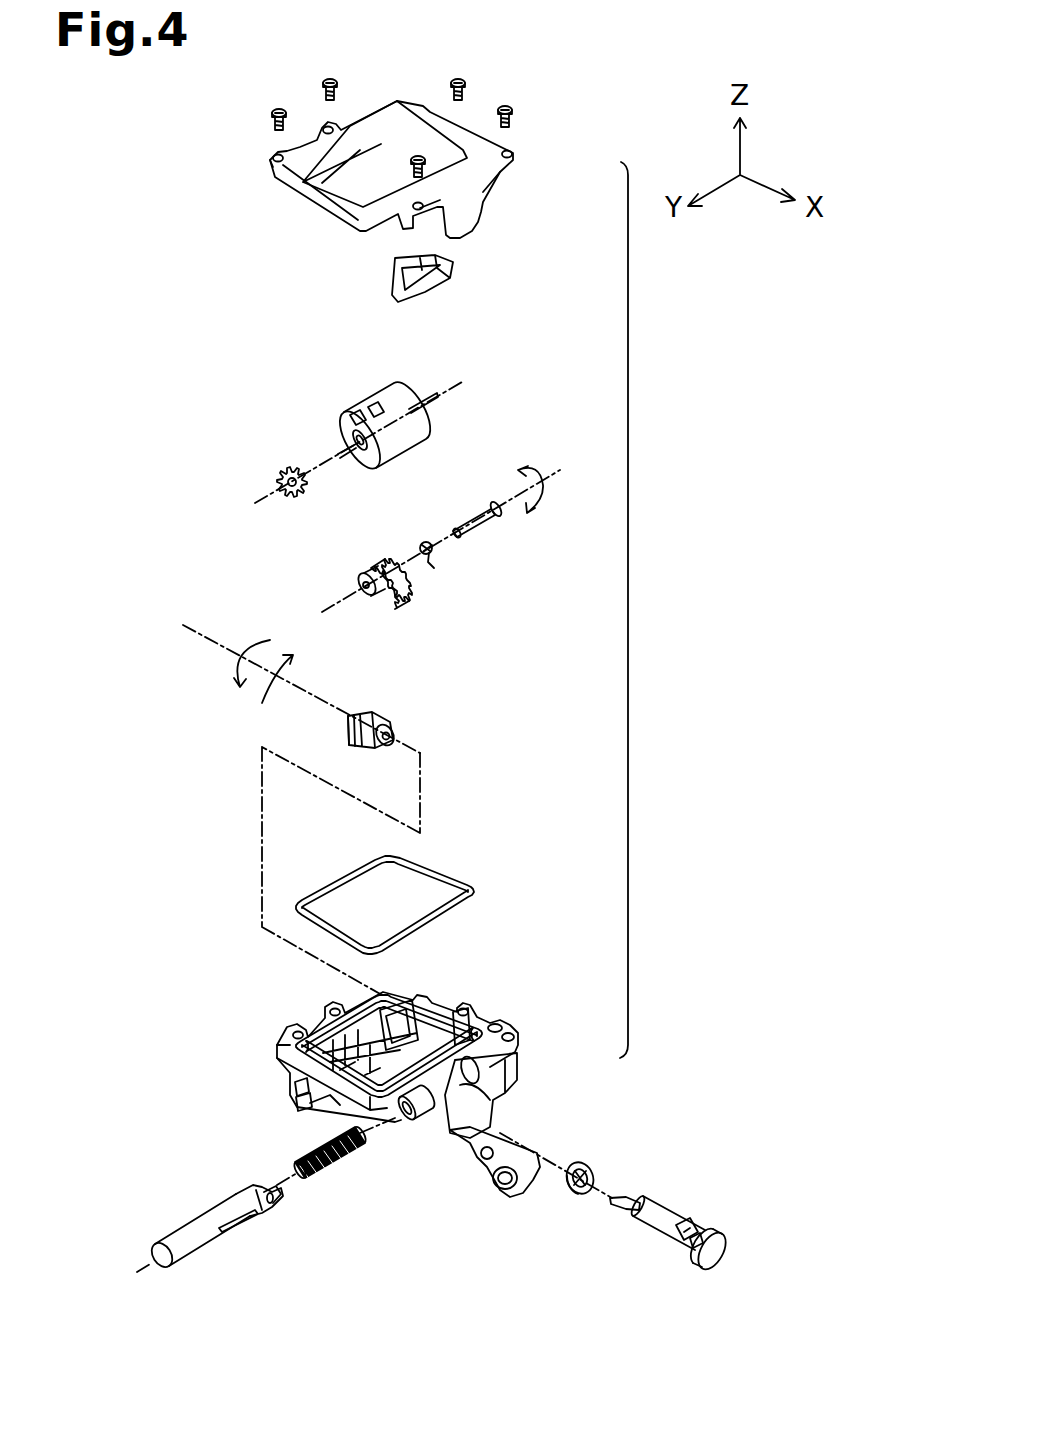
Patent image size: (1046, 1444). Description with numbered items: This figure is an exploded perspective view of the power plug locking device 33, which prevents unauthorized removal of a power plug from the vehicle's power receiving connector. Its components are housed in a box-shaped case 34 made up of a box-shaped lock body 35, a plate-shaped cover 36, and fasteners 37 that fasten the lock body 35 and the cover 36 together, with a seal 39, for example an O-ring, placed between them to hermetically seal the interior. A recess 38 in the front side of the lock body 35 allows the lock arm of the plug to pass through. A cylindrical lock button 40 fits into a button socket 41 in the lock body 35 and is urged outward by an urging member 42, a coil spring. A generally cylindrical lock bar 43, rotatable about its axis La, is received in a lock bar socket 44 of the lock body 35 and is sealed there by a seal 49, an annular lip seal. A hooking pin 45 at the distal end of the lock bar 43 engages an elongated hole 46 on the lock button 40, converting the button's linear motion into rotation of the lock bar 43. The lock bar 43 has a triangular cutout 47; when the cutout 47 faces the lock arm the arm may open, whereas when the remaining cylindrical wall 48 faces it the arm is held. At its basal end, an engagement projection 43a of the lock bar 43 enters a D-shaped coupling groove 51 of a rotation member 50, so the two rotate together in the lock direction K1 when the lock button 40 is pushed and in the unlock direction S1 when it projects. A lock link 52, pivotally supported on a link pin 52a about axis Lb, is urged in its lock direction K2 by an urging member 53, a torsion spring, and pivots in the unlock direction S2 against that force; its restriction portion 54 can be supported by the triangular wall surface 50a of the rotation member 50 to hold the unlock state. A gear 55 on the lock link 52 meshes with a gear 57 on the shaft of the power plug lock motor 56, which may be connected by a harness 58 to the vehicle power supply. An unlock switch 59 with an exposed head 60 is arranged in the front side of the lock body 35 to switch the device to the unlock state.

The power plug locking device 33 is at (146, 131).
The case 34 is at (650, 610).
The lock body 35 is at (516, 1056).
The cover 36 is at (513, 170).
The fasteners 37 is at (506, 107).
The recess 38 is at (316, 1108).
The seal 39 is at (442, 877).
The lock button 40 is at (172, 1232).
The button socket 41 is at (412, 1125).
The urging member 42 is at (338, 1178).
The lock bar 43 is at (652, 1204).
The engagement projection 43a is at (612, 1206).
The lock bar socket 44 is at (477, 1105).
The hooking pin 45 is at (695, 1230).
The elongated hole 46 is at (268, 1186).
The cutout 47 is at (648, 1232).
The cylindrical wall 48 is at (680, 1218).
The seal 49 is at (583, 1162).
The rotation member 50 is at (383, 715).
The triangular wall surface 50a is at (347, 731).
The coupling groove 51 is at (388, 746).
The lock link 52 is at (365, 573).
The link pin 52a is at (487, 522).
The urging member 53 is at (436, 553).
The restriction portion 54 is at (378, 608).
The gear 55 is at (405, 586).
The power plug lock motor 56 is at (412, 386).
The gear 57 is at (283, 475).
The harness 58 is at (390, 284).
The unlock switch 59 is at (293, 1085).
The head 60 is at (296, 1100).
The lock direction K1 is at (262, 703).
The lock direction K2 is at (503, 482).
The unlock direction S1 is at (270, 640).
The unlock direction S2 is at (546, 496).
The axis La is at (727, 1258).
The axis Lb is at (332, 607).